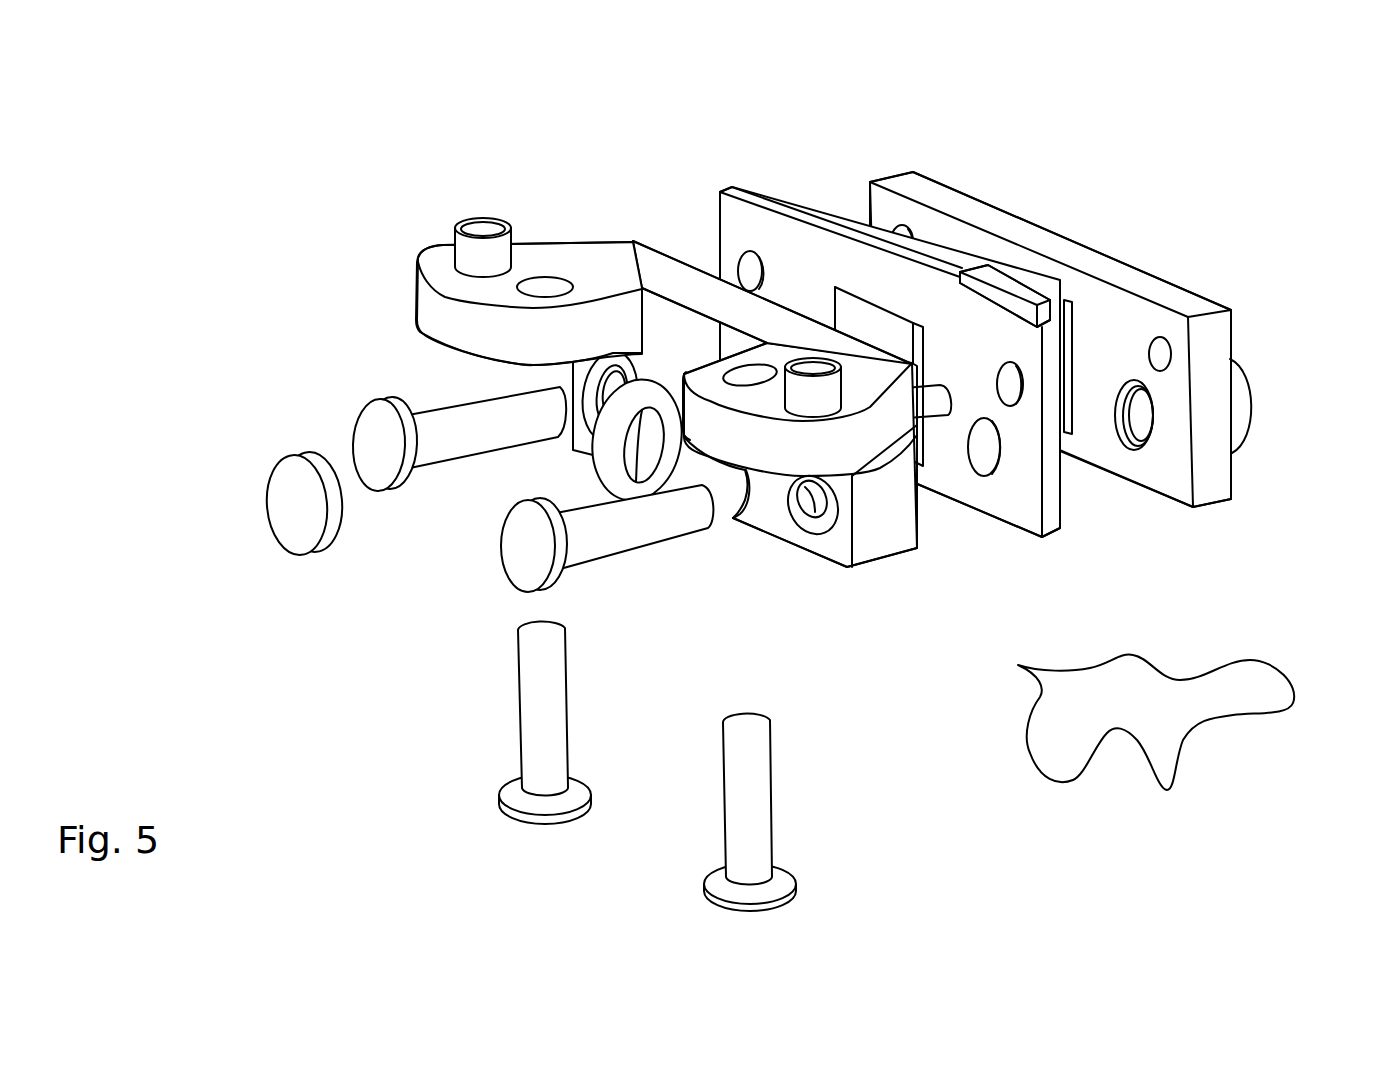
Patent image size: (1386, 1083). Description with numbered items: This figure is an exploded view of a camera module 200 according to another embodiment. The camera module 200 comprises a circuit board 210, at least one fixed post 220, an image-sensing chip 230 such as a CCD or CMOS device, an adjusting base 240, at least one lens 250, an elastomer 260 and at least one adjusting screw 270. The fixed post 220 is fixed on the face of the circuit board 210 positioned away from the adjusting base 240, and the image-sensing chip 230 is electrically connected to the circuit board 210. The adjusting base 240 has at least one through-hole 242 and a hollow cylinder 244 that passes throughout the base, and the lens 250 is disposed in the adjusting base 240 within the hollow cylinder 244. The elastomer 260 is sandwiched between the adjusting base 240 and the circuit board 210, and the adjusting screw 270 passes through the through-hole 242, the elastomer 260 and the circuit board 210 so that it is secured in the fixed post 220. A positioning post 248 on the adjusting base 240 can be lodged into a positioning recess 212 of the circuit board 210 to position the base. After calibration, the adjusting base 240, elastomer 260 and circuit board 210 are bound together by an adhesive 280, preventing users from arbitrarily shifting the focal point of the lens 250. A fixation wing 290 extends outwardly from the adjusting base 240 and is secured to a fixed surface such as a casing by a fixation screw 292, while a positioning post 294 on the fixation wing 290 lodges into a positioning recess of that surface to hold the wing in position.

The camera module 200 is at (216, 61).
The circuit board 210 is at (1168, 297).
The positioning recess 212 is at (1157, 355).
The fixed post 220 is at (1240, 409).
The image-sensing chip 230 is at (1008, 288).
The adjusting base 240 is at (592, 262).
The through-hole 242 is at (813, 503).
The hollow cylinder 244 is at (653, 454).
The positioning post 248 is at (932, 405).
The lens 250 is at (292, 518).
The elastomer 260 is at (766, 203).
The adjusting screw 270 is at (525, 557).
The adhesive 280 is at (1170, 710).
The fixation wing 290 is at (412, 292).
The fixation screw 292 is at (755, 826).
The positioning post 294 is at (480, 223).